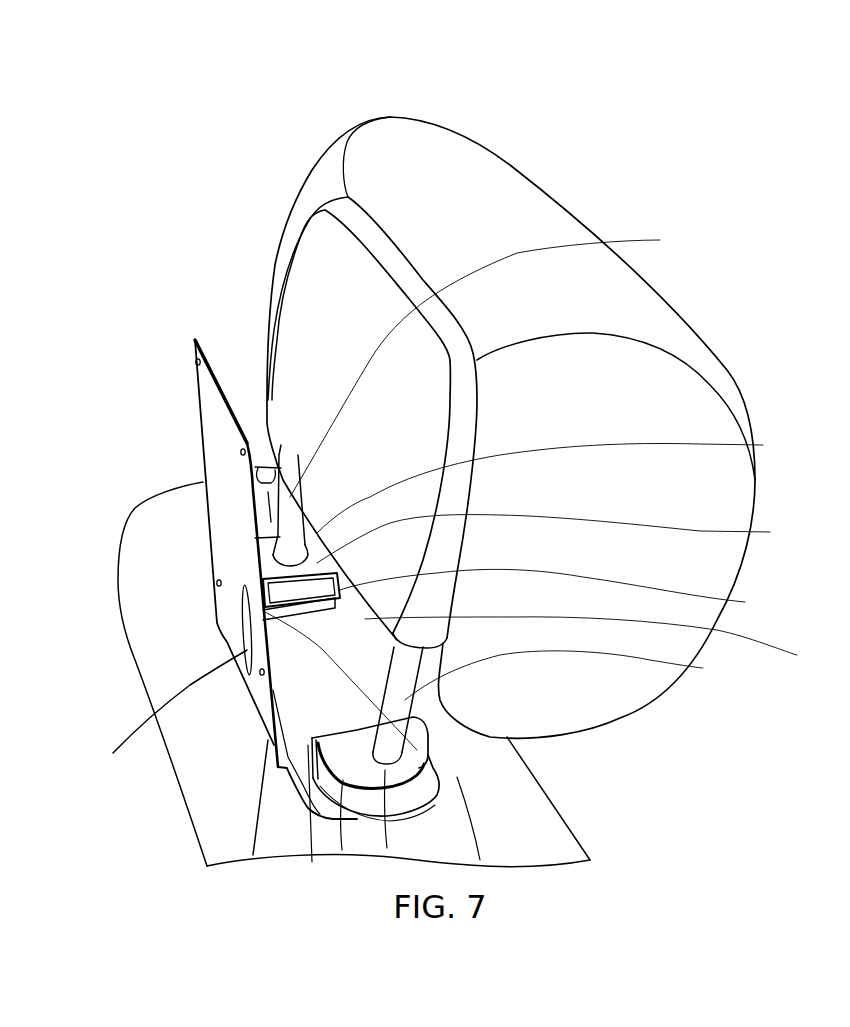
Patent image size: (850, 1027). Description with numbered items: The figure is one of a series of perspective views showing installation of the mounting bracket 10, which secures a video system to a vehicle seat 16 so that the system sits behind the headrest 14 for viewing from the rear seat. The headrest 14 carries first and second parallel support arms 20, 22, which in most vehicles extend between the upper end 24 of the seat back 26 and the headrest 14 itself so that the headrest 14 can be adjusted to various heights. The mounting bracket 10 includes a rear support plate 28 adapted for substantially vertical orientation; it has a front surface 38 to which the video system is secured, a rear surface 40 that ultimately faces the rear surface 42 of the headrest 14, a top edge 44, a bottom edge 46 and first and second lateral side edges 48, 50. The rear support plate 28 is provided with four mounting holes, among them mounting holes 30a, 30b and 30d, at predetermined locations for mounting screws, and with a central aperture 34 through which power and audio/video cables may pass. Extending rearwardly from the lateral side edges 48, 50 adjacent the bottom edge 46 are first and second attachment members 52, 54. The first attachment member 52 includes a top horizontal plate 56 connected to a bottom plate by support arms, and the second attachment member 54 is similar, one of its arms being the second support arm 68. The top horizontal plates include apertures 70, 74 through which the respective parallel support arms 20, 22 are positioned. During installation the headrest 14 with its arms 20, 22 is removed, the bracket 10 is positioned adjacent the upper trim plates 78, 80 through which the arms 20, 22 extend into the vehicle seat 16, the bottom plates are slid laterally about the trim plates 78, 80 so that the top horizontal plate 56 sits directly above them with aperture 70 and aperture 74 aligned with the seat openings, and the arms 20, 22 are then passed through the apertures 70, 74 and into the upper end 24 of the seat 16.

The mounting bracket 10 is at (208, 276).
The headrest 14 is at (397, 133).
The vehicle seat 16 is at (553, 830).
The first parallel support arm 20 is at (579, 675).
The second parallel support arm 22 is at (505, 356).
The upper end 24 is at (372, 842).
The seat back 26 is at (307, 747).
The rear support plate 28 is at (220, 494).
The mounting hole 30a is at (190, 362).
The mounting hole 30b is at (262, 825).
The mounting hole 30d is at (218, 582).
The central aperture 34 is at (164, 714).
The front surface 38 is at (213, 443).
The rear surface 40 is at (208, 412).
The rear surface of the headrest 42 is at (320, 273).
The top edge 44 is at (231, 398).
The bottom edge 46 is at (321, 608).
The first lateral side edge 48 is at (550, 913).
The second lateral side edge 50 is at (197, 417).
The first attachment member 52 is at (408, 775).
The second attachment member 54 is at (571, 538).
The top horizontal plate 56 is at (331, 832).
The second support arm 68 is at (566, 593).
The aperture 70 is at (380, 827).
The aperture 74 is at (570, 478).
The upper trim plate 78 is at (450, 770).
The upper trim plate 80 is at (604, 646).